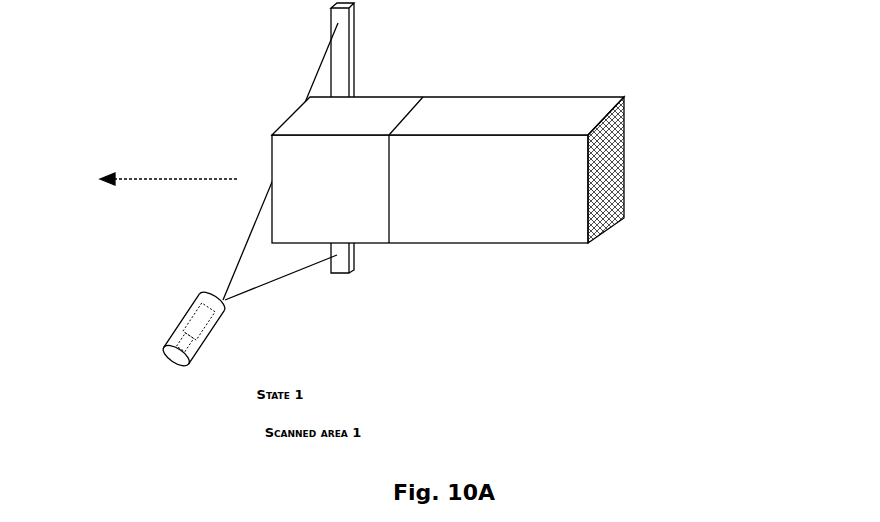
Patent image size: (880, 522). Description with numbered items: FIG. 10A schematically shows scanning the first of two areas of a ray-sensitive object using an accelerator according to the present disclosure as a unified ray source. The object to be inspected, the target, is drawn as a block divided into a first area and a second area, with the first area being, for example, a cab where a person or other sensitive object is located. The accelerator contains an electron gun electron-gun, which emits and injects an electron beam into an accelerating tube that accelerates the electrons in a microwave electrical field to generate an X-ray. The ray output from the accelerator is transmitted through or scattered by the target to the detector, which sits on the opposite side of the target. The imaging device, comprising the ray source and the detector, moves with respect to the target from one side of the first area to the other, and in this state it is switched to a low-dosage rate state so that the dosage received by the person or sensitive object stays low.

The element detector is at (341, 53).
The target to be inspected target is at (551, 192).
The element accelerator is at (199, 322).
The electron gun electron-gun is at (207, 345).